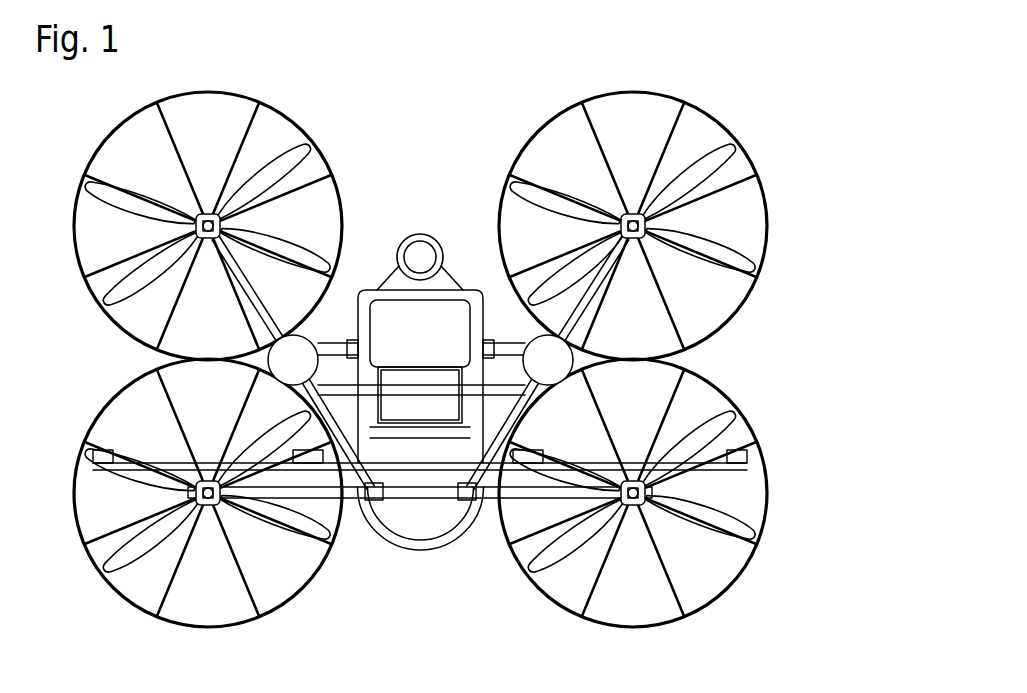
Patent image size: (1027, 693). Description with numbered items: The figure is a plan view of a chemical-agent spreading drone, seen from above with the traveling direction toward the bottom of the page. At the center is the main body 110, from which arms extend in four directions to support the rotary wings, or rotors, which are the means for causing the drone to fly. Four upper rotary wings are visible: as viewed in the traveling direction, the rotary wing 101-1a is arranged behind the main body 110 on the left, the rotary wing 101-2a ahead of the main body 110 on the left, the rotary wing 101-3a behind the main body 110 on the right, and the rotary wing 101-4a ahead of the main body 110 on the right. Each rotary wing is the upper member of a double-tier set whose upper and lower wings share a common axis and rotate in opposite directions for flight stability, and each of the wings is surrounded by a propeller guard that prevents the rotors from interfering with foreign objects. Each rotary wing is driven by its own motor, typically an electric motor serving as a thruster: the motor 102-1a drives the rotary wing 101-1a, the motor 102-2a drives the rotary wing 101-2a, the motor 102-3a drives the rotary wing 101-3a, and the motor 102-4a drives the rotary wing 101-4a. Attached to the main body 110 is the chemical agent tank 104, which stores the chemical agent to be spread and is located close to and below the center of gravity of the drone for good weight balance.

The rotary wing 101-1a is at (698, 157).
The rotary wing 101-2a is at (720, 510).
The rotary wing 101-3a is at (273, 157).
The rotary wing 101-4a is at (132, 568).
The motor 102-1a is at (630, 213).
The motor 102-2a is at (650, 505).
The motor 102-3a is at (205, 213).
The motor 102-4a is at (218, 504).
The chemical agent tank 104 is at (391, 265).
The main body 110 is at (425, 545).